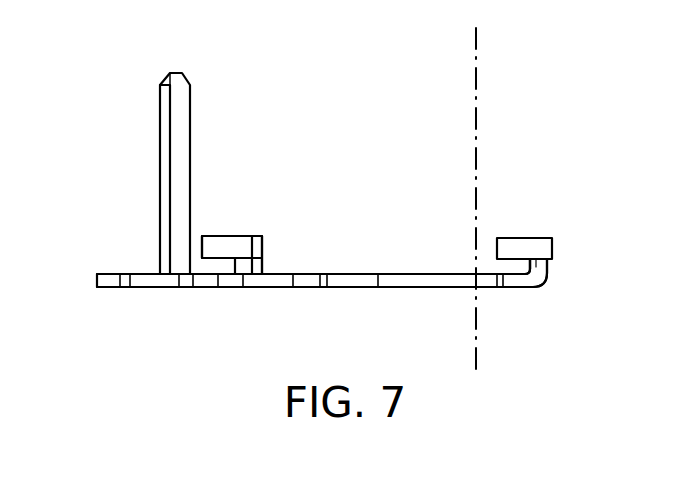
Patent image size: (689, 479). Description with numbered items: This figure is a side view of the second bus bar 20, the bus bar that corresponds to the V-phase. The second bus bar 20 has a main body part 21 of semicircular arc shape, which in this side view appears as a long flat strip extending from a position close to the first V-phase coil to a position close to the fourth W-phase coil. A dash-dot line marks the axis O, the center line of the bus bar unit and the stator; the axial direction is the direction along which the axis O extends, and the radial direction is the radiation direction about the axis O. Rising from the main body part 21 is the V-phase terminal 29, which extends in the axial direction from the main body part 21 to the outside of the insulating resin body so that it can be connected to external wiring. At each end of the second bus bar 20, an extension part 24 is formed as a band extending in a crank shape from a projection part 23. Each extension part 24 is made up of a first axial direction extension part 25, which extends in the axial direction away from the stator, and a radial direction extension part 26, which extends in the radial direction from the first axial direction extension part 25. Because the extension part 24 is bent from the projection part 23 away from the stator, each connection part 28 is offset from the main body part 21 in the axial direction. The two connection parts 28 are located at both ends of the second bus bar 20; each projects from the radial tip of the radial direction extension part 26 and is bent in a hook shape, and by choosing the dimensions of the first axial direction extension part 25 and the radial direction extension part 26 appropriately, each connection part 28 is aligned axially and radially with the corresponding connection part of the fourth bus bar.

The second bus bar 20 is at (293, 309).
The main body part 21 is at (355, 283).
The projection part 23 is at (513, 282).
The extension part 24 is at (411, 206).
The first axial direction extension part 25 is at (247, 258).
The radial direction extension part 26 is at (232, 248).
The connection part 28 is at (218, 245).
The V-phase terminal 29 is at (168, 183).
The axis O is at (478, 120).